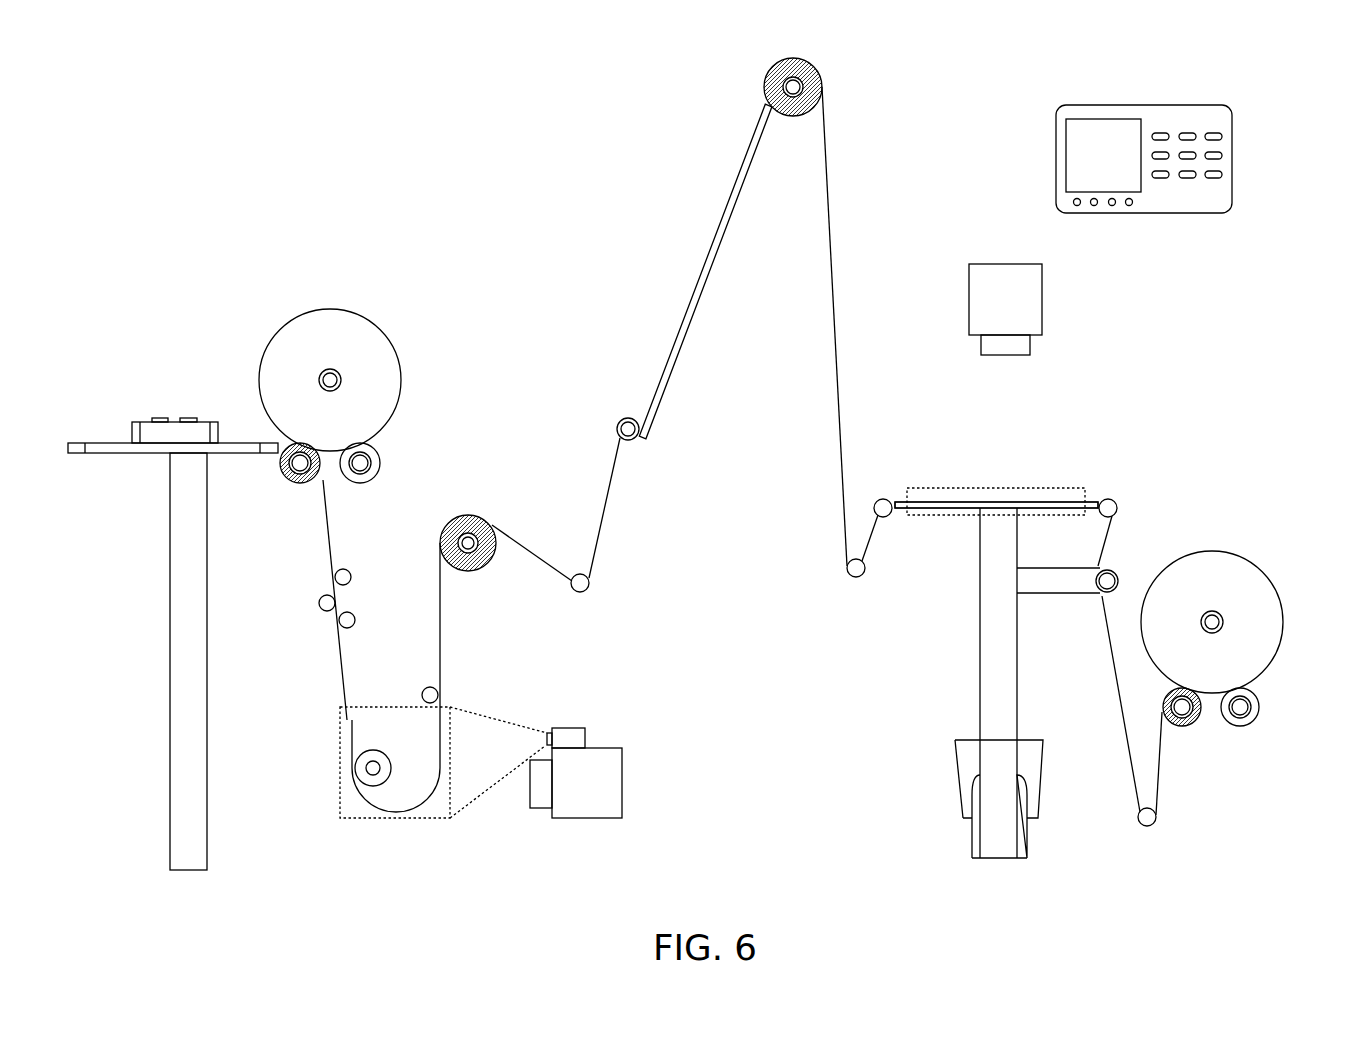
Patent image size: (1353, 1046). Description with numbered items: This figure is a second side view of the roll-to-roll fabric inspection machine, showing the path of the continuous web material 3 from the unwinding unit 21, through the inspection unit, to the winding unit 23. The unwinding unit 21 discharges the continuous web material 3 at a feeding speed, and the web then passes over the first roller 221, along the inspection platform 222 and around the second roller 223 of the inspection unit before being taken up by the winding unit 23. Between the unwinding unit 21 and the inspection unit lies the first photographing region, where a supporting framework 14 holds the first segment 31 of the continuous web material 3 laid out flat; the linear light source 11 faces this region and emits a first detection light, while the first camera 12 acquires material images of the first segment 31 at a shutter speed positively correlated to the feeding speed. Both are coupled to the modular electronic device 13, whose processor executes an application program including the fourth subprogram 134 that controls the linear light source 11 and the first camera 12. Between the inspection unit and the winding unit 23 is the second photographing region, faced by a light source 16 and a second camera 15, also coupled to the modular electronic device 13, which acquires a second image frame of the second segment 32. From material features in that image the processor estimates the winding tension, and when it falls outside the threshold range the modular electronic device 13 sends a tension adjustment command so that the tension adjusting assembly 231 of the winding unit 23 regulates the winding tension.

The continuous web material 3 is at (1095, 620).
The linear light source 11 is at (955, 760).
The first camera 12 is at (968, 295).
The modular electronic device 13 is at (1162, 127).
The fourth subprogram 134 is at (1222, 157).
The supporting framework 14 is at (897, 510).
The second camera 15 is at (588, 818).
The light source 16 is at (572, 728).
The unwinding unit 21 is at (1272, 688).
The winding unit 23 is at (382, 443).
The first segment 31 is at (1064, 488).
The second segment 32 is at (340, 780).
The first roller 221 is at (790, 117).
The inspection platform 222 is at (697, 308).
The second roller 223 is at (491, 572).
The tension adjusting assembly 231 is at (309, 609).